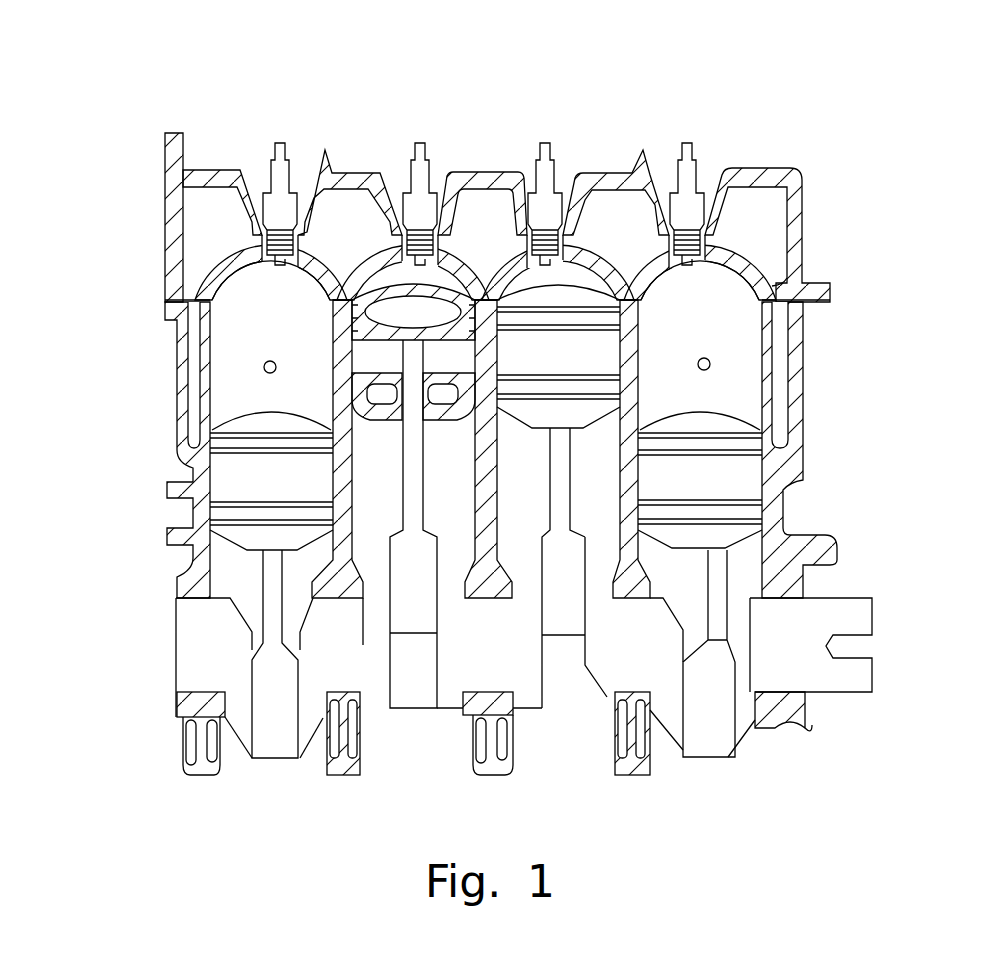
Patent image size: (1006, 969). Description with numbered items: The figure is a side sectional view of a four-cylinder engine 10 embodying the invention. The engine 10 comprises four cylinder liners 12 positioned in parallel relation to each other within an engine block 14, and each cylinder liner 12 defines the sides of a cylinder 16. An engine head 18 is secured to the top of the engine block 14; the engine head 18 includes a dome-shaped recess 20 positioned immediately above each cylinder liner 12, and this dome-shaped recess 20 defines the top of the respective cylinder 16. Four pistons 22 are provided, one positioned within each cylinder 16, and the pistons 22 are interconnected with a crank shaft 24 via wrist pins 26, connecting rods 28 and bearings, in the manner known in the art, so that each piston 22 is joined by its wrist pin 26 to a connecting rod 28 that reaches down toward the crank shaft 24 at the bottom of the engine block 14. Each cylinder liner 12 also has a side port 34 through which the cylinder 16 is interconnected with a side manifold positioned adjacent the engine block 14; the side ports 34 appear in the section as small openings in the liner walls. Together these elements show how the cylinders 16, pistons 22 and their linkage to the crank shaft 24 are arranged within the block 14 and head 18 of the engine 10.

The engine 10 is at (169, 127).
The cylinder liner 12 is at (178, 332).
The engine block 14 is at (180, 420).
The cylinder 16 is at (294, 332).
The engine head 18 is at (165, 240).
The dome-shaped recess 20 is at (248, 278).
The piston 22 is at (232, 473).
The crank shaft 24 is at (855, 622).
The wrist pin 26 is at (372, 362).
The connecting rod 28 is at (270, 578).
The side port 34 is at (262, 368).